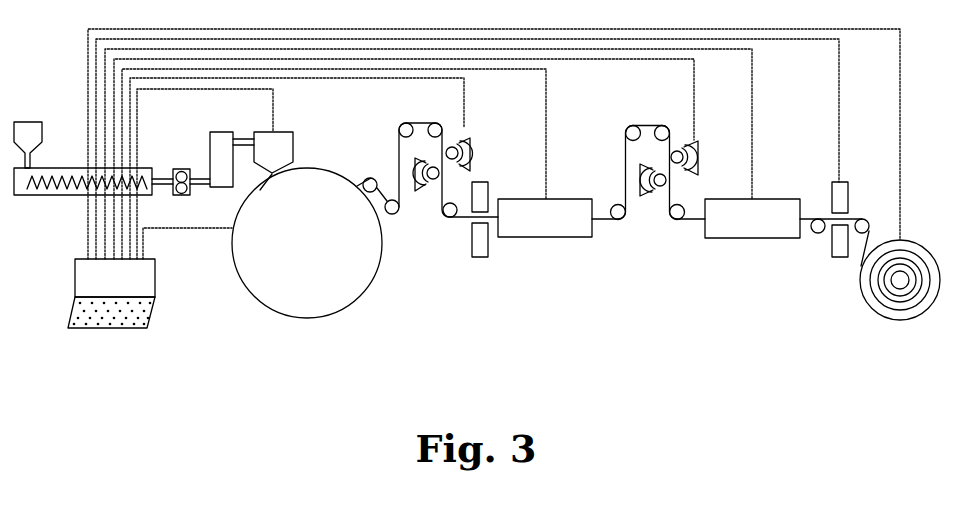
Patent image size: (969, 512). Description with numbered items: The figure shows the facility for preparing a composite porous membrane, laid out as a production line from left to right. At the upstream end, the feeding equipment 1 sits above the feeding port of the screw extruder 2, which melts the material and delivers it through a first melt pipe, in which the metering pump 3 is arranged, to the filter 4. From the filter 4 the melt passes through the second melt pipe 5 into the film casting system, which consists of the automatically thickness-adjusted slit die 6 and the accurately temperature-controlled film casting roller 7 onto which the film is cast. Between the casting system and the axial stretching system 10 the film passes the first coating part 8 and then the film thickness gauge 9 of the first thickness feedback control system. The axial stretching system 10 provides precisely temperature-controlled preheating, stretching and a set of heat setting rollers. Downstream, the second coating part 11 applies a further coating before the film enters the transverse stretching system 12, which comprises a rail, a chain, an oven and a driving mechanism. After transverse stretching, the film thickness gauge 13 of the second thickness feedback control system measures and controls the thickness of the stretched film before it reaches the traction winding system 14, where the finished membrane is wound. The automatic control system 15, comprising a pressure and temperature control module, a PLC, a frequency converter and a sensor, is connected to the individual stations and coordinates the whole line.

The feeding equipment 1 is at (28, 145).
The screw extruder 2 is at (93, 193).
The metering pump 3 is at (191, 193).
The filter 4 is at (221, 159).
The second melt pipe 5 is at (243, 130).
The slit die 6 is at (273, 161).
The film casting roller 7 is at (315, 243).
The first coating part 8 is at (448, 170).
The film thickness gauge 9 is at (480, 232).
The axial stretching system 10 is at (545, 218).
The second coating part 11 is at (655, 173).
The transverse stretching system 12 is at (752, 218).
The film thickness gauge 13 is at (834, 232).
The traction winding system 14 is at (900, 289).
The automatic control system 15 is at (122, 293).